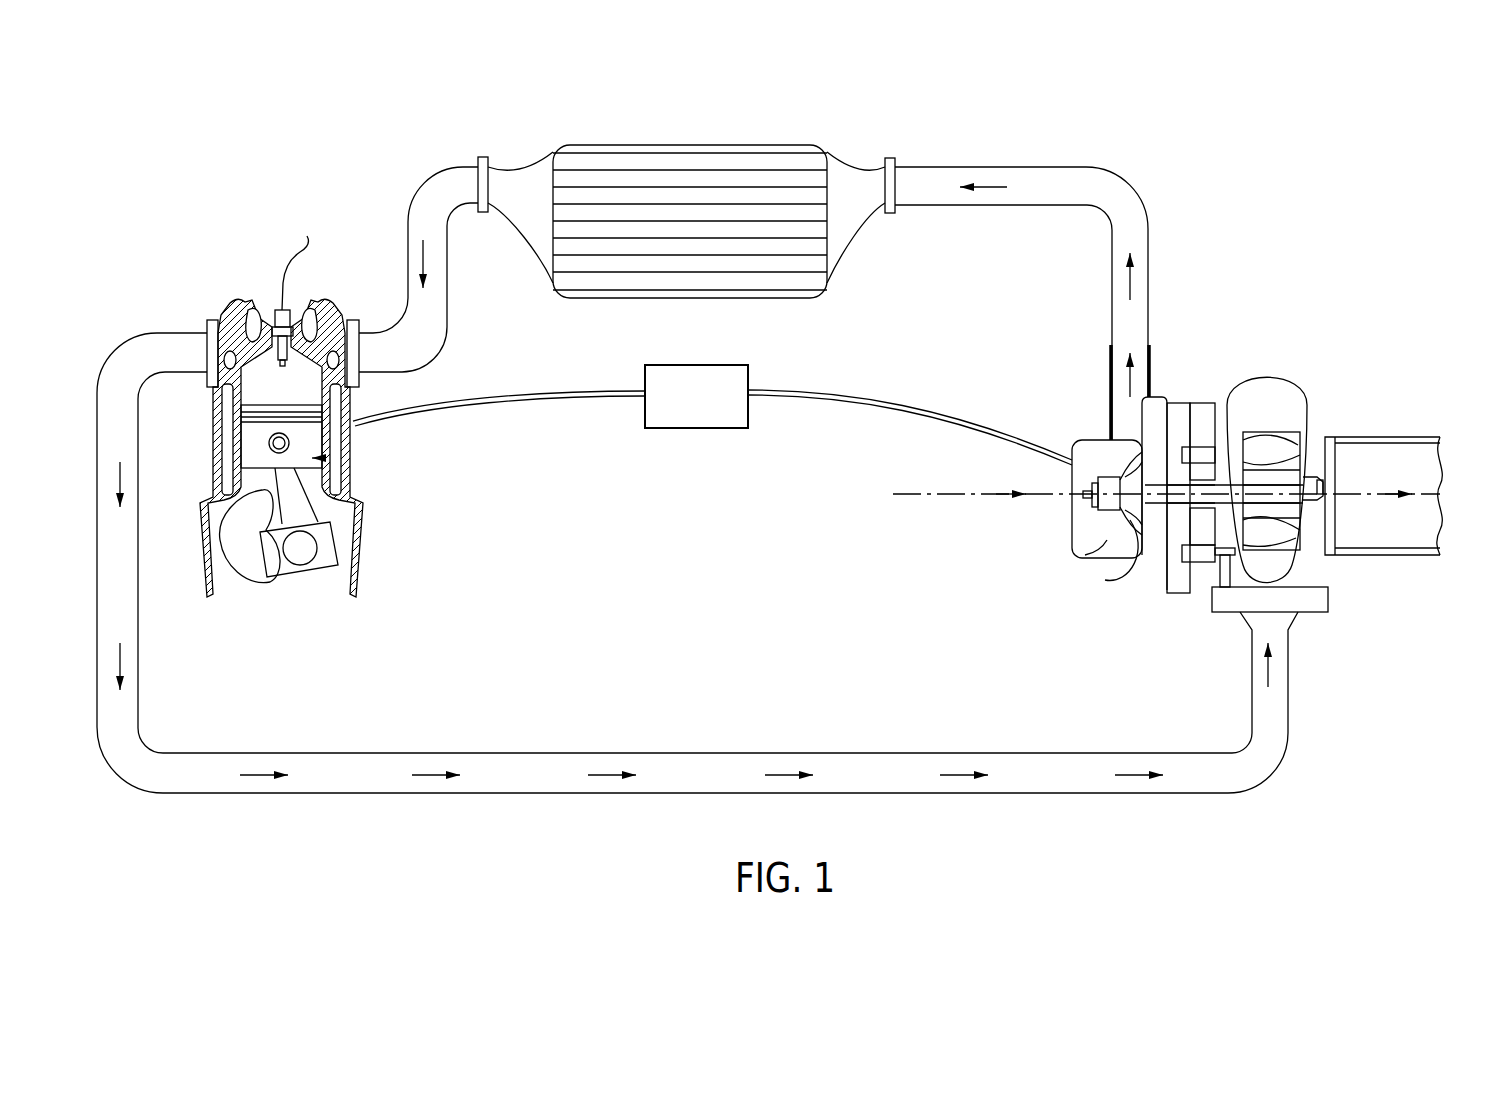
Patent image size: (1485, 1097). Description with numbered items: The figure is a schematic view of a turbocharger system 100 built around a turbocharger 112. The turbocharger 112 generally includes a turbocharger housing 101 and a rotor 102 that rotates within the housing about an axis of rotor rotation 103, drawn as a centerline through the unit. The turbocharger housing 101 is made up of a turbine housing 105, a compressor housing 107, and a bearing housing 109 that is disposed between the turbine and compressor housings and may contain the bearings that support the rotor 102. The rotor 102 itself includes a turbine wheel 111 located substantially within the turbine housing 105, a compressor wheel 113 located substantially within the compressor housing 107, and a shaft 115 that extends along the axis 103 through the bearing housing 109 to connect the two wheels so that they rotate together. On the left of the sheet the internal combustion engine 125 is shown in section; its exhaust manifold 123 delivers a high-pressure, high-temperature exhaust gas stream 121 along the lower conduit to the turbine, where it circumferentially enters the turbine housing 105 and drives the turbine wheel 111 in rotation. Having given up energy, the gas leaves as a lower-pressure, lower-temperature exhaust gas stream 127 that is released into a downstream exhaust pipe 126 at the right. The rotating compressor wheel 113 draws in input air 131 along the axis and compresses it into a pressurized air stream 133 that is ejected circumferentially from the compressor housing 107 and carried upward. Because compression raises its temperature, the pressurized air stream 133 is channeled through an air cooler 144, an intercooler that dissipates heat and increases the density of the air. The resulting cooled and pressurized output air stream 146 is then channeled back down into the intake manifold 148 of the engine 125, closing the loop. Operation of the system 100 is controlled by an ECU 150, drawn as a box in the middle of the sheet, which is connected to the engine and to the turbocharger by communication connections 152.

The turbocharger system 100 is at (769, 450).
The turbocharger housing 101 is at (1161, 430).
The rotor 102 is at (1214, 555).
The axis of rotor rotation 103 is at (923, 496).
The turbine housing 105 is at (1278, 443).
The compressor housing 107 is at (1089, 541).
The bearing housing 109 is at (1194, 469).
The turbine wheel 111 is at (1255, 478).
The turbocharger 112 is at (1289, 396).
The compressor wheel 113 is at (1117, 558).
The shaft 115 is at (1205, 500).
The exhaust gas stream 121 is at (781, 774).
The exhaust manifold 123 is at (233, 338).
The internal combustion engine 125 is at (338, 443).
The downstream exhaust pipe 126 is at (1383, 446).
The lower-pressure and lower-temperature exhaust gas stream 127 is at (1372, 495).
The input air 131 is at (975, 493).
The pressurized air stream 133 is at (1130, 385).
The air cooler 144 is at (685, 170).
The cooled and pressurized output air stream 146 is at (420, 252).
The intake manifold 148 is at (343, 367).
The ECU 150 is at (690, 428).
The communication connections 152 is at (842, 406).